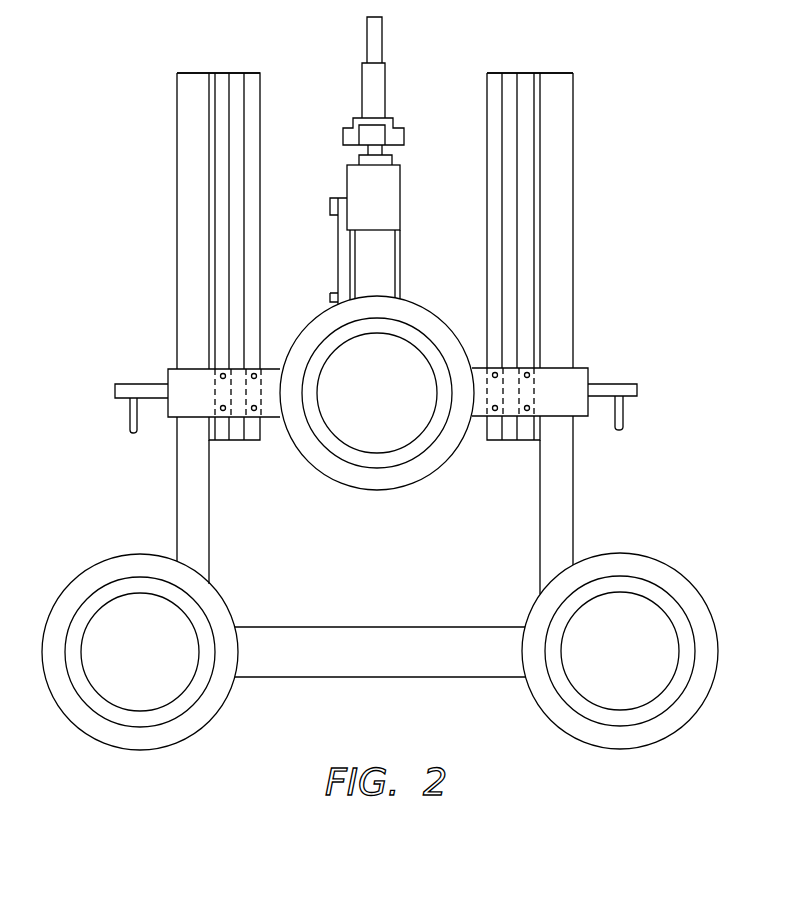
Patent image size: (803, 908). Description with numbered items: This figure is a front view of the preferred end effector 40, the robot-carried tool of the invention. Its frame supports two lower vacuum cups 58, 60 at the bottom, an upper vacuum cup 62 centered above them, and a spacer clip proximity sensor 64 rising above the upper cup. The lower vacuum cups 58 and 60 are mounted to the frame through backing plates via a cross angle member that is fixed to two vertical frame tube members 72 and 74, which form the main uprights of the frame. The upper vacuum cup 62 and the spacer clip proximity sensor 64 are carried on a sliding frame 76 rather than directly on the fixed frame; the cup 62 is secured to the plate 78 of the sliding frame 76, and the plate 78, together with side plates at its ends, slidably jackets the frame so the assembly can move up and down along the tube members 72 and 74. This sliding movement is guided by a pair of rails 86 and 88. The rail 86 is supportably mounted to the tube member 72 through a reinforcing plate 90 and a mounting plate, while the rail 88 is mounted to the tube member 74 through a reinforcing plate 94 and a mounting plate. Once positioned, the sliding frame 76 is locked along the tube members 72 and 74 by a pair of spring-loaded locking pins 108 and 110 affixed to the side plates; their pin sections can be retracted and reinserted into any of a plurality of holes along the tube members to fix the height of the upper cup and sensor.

The end effector 40 is at (655, 151).
The lower vacuum cup 58 is at (105, 557).
The lower vacuum cup 60 is at (670, 568).
The upper vacuum cup 62 is at (312, 468).
The spacer clip proximity sensor 64 is at (400, 183).
The frame tube member 72 is at (176, 212).
The frame tube member 74 is at (572, 193).
The sliding frame 76 is at (168, 378).
The plate 78 is at (575, 367).
The rail 86 is at (244, 94).
The rail 88 is at (502, 94).
The reinforcing plate 90 is at (210, 73).
The reinforcing plate 94 is at (534, 73).
The spring-loaded locking pin 108 is at (115, 391).
The spring-loaded locking pin 110 is at (628, 384).